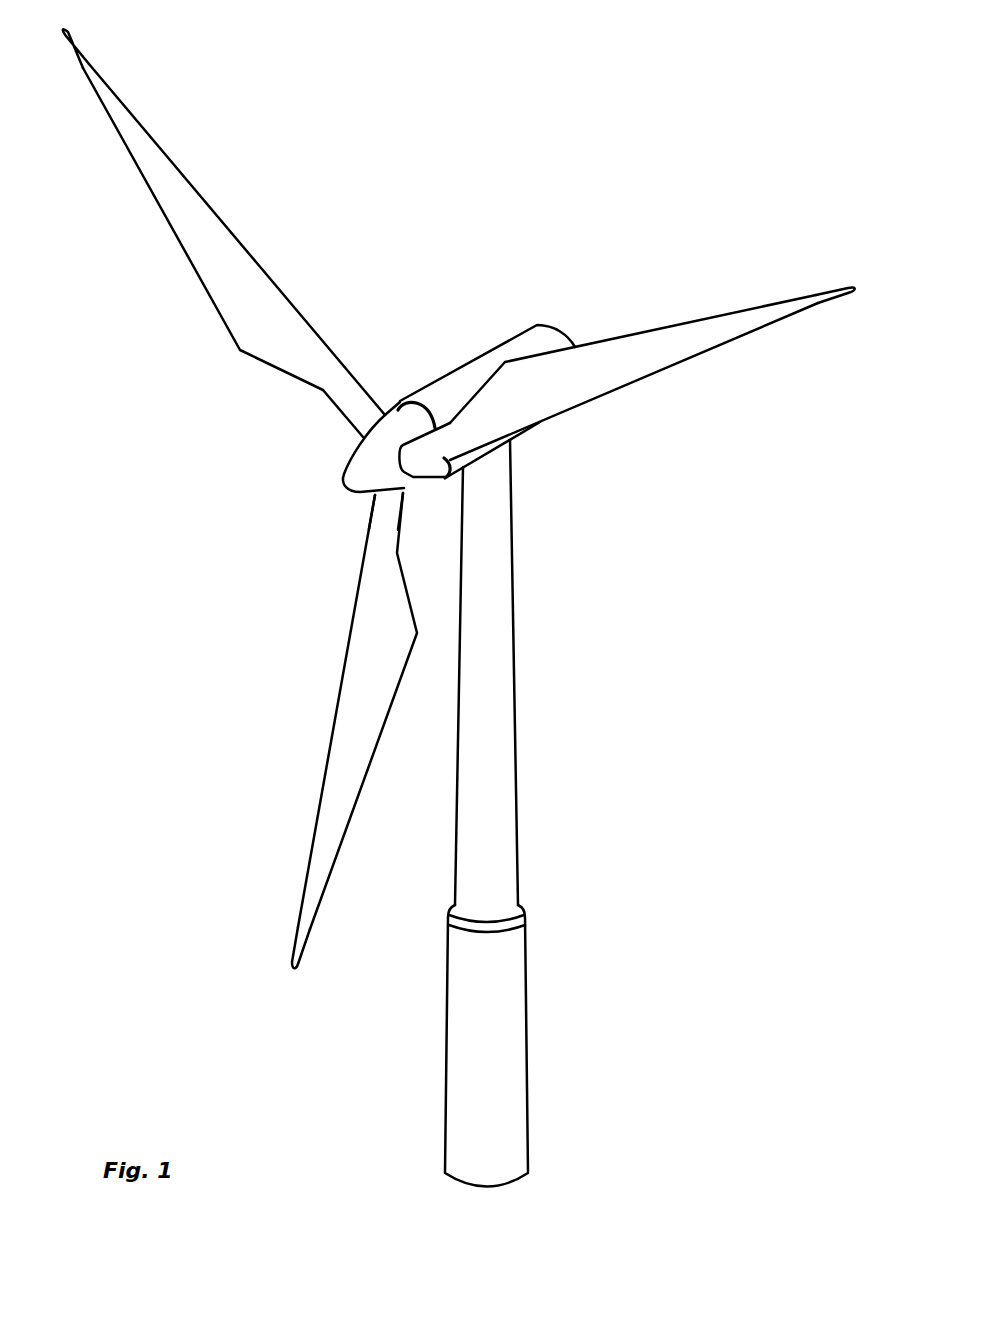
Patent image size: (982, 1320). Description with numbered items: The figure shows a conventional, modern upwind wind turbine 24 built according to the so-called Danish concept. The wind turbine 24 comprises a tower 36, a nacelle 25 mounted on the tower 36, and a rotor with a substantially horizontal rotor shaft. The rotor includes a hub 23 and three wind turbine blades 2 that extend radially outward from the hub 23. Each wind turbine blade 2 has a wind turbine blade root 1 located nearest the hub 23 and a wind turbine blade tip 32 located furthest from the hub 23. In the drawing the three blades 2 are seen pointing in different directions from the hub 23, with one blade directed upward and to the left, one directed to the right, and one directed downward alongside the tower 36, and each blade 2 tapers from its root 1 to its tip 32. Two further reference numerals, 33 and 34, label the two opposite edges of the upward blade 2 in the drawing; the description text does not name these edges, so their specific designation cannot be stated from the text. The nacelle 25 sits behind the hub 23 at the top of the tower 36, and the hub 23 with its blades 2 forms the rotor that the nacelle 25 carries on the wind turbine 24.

The wind turbine blade root 1 is at (370, 425).
The wind turbine blade 2 is at (255, 323).
The hub 23 is at (363, 483).
The wind turbine 24 is at (614, 753).
The nacelle 25 is at (452, 386).
The wind turbine blade tip 32 is at (103, 88).
The trailing edge 33 is at (150, 197).
The leading edge 34 is at (195, 183).
The tower 36 is at (505, 678).